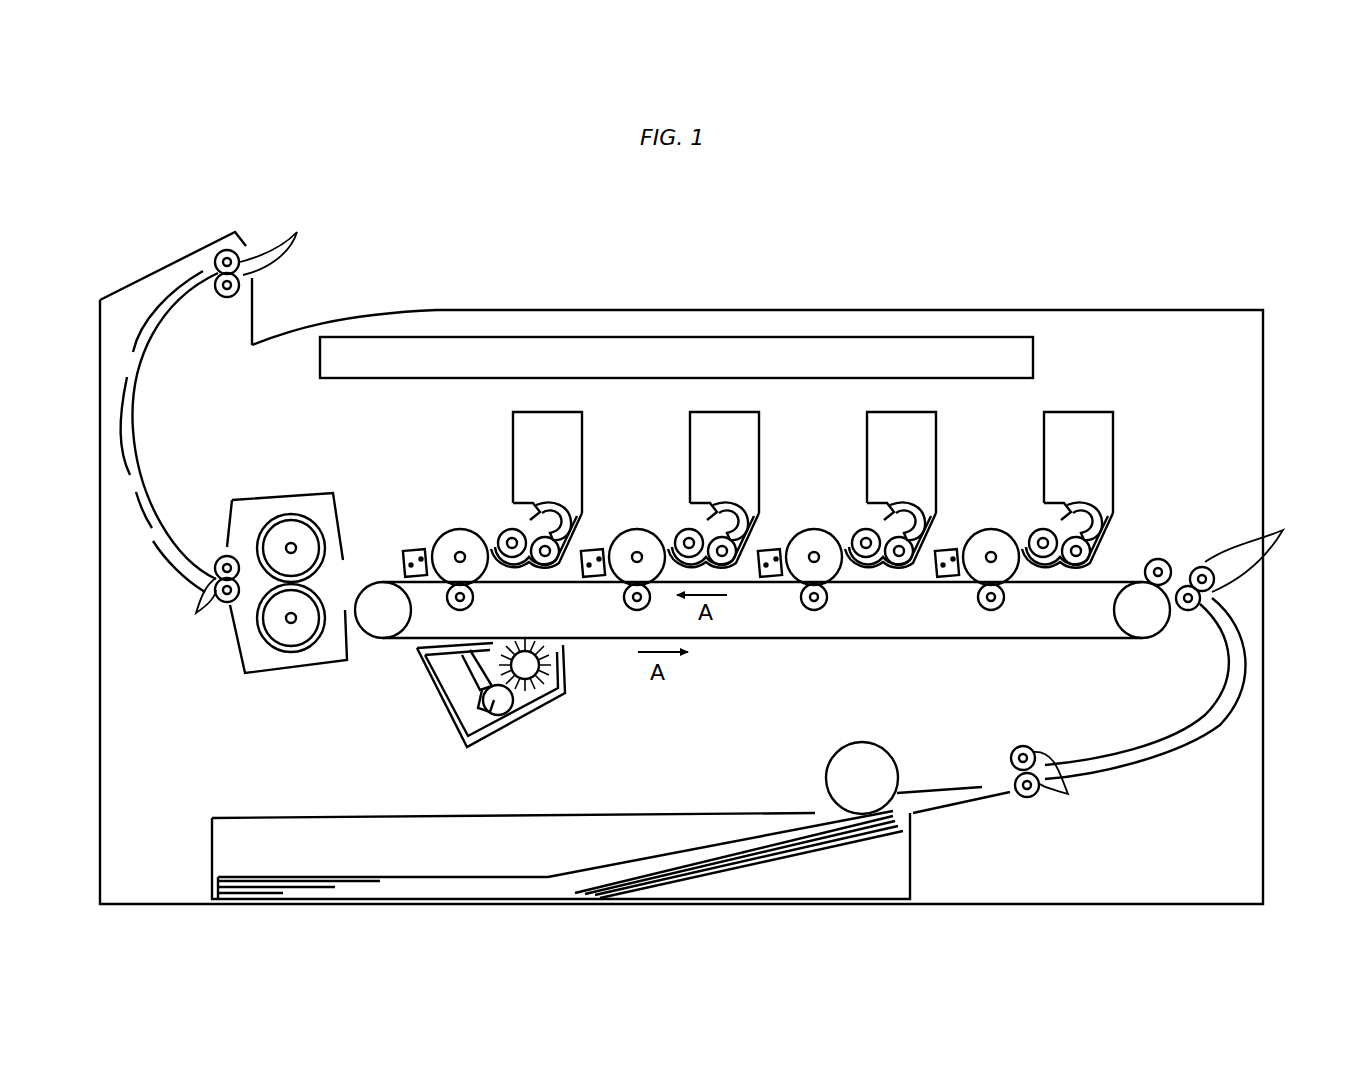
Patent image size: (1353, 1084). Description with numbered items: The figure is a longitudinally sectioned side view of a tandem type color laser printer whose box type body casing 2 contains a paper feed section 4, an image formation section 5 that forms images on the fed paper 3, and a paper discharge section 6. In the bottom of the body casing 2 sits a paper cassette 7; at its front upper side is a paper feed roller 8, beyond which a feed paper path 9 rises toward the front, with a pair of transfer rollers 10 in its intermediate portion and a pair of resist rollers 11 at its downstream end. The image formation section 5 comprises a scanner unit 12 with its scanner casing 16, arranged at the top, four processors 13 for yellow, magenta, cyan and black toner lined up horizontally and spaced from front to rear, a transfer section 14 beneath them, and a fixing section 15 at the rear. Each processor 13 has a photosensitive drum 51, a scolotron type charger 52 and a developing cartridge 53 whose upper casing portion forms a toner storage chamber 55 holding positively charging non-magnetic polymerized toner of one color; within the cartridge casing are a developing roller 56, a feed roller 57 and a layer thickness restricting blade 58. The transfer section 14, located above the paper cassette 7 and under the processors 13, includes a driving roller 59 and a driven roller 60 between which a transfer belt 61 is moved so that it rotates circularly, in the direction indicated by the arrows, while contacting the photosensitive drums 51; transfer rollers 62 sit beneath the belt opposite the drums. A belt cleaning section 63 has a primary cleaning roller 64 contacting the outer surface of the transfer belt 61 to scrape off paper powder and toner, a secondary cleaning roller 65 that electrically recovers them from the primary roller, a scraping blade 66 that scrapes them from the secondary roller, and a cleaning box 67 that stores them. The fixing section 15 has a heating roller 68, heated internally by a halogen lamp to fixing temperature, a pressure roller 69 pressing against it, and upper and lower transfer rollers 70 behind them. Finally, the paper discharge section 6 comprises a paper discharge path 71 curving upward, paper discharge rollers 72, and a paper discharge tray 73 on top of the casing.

The body casing 2 is at (1263, 446).
The paper 3 is at (468, 877).
The paper feed section 4 is at (1230, 779).
The image formation section 5 is at (1123, 432).
The paper discharge section 6 is at (143, 300).
The paper cassette 7 is at (272, 817).
The paper feed roller 8 is at (827, 775).
The feed paper path 9 is at (1147, 770).
The transfer rollers 10 is at (1055, 778).
The resist rollers 11 is at (1230, 565).
The scanner unit 12 is at (799, 335).
The processor 13 is at (464, 454).
The transfer section 14 is at (1098, 650).
The fixing section 15 is at (298, 498).
The scanner casing 16 is at (1033, 360).
The photosensitive drum 51 is at (446, 545).
The scolotron type charger 52 is at (405, 550).
The developing cartridge 53 is at (559, 410).
The toner storage chamber 55 is at (517, 416).
The developing roller 56 is at (497, 537).
The feed roller 57 is at (548, 565).
The layer thickness restricting blade 58 is at (512, 508).
The driving roller 59 is at (390, 630).
The driven roller 60 is at (1143, 623).
The transfer belt 61 is at (893, 640).
The transfer rollers 62 is at (453, 608).
The belt cleaning section 63 is at (460, 757).
The primary cleaning roller 64 is at (525, 680).
The secondary cleaning roller 65 is at (500, 715).
The scraping blade 66 is at (462, 722).
The cleaning box 67 is at (441, 697).
The heating roller 68 is at (268, 538).
The pressure roller 69 is at (265, 612).
The transfer rollers 70 is at (204, 606).
The paper discharge path 71 is at (140, 428).
The paper discharge rollers 72 is at (261, 249).
The paper discharge tray 73 is at (372, 311).